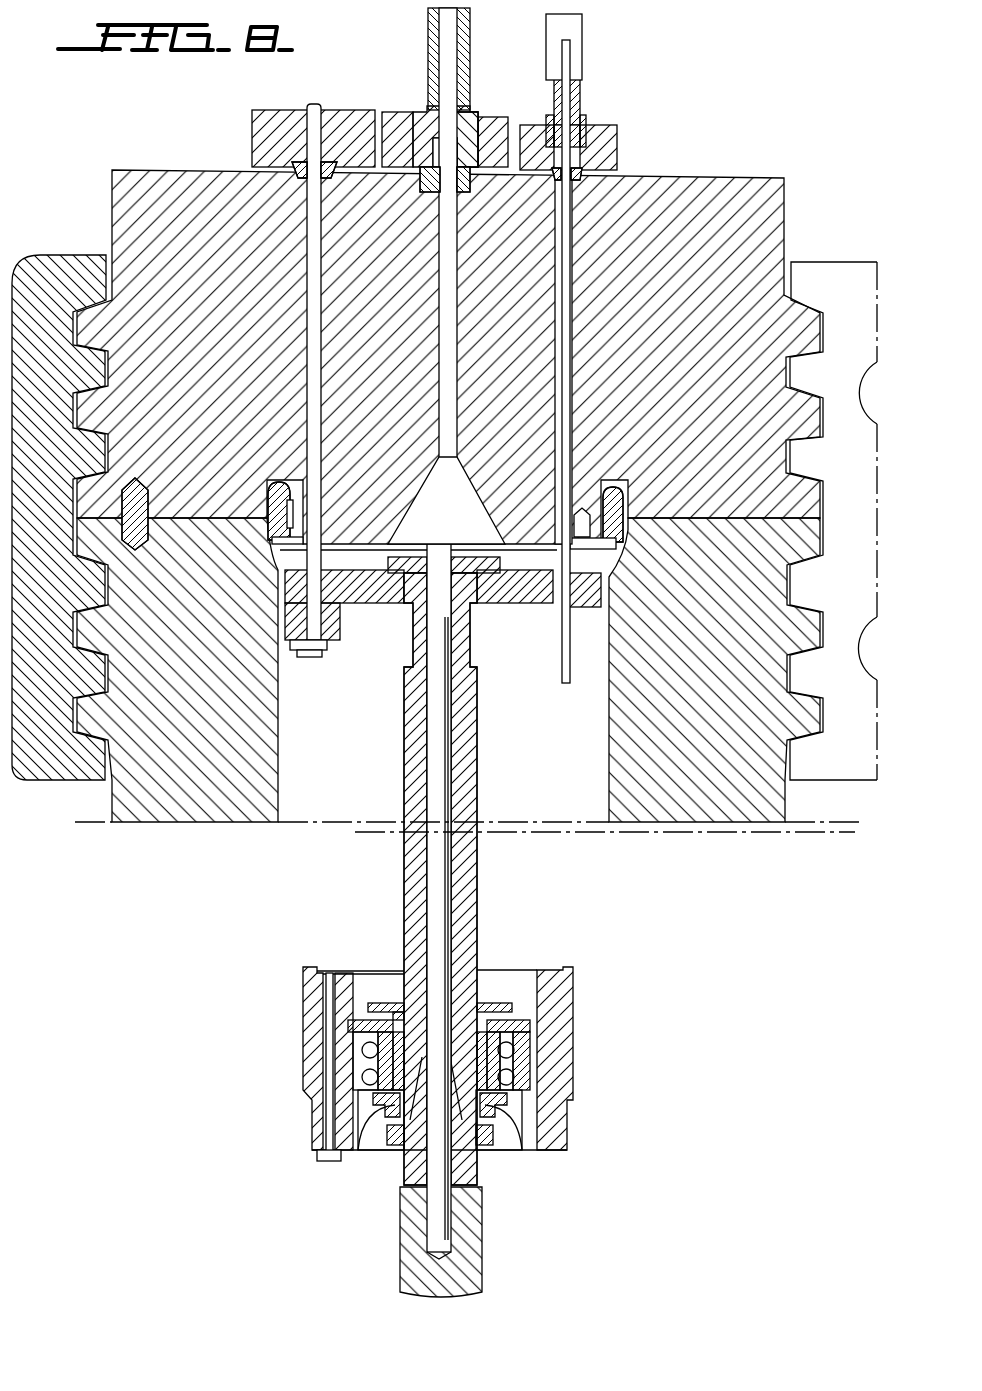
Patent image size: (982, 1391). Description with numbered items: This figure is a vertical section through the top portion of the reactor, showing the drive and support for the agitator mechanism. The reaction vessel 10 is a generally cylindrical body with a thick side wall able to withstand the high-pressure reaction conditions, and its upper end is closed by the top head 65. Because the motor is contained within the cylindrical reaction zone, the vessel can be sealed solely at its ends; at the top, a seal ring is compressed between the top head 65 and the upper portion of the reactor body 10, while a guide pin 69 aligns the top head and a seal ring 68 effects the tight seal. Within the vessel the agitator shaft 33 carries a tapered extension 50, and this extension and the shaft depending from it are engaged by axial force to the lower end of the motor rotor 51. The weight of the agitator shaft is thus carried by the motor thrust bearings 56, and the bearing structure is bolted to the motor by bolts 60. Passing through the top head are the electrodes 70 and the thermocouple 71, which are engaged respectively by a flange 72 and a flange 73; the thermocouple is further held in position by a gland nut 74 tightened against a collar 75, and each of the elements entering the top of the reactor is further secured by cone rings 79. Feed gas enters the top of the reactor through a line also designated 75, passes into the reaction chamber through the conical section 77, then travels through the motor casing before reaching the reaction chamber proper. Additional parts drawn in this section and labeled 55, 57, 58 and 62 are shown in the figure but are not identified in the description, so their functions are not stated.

The reaction vessel 10 is at (173, 652).
The agitator shaft 33 is at (400, 1282).
The tapered extension 50 is at (385, 1125).
The motor rotor 51 is at (478, 905).
The plate 55 is at (468, 590).
The motor thrust bearings 56 is at (362, 1047).
The bearing housing 57 is at (560, 1030).
The stem 58 is at (447, 745).
The bolts 60 is at (328, 1165).
The clamp ring 62 is at (23, 526).
The top head 65 is at (198, 397).
The seal ring 68 is at (270, 497).
The guide pin 69 is at (148, 530).
The electrodes 70 is at (331, 100).
The thermocouple 71 is at (573, 48).
The flange 72 is at (348, 112).
The flange 73 is at (617, 150).
The gland nut 74 is at (586, 122).
The collar 75 is at (430, 28).
The conical section 77 is at (431, 522).
The cone rings 79 is at (293, 165).